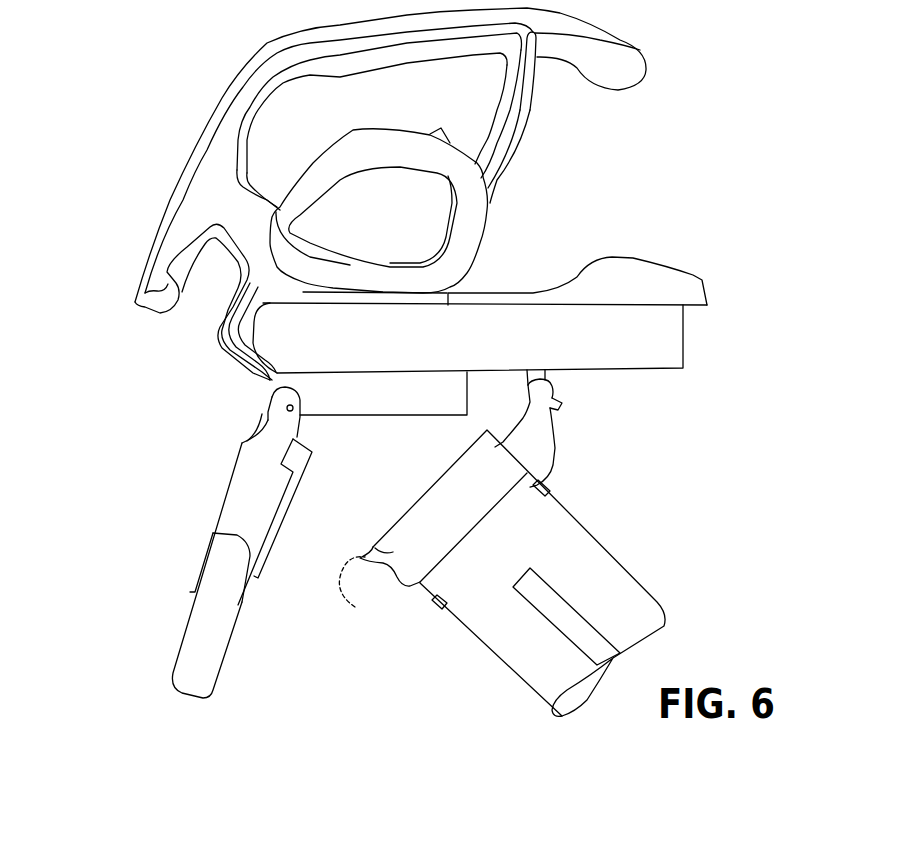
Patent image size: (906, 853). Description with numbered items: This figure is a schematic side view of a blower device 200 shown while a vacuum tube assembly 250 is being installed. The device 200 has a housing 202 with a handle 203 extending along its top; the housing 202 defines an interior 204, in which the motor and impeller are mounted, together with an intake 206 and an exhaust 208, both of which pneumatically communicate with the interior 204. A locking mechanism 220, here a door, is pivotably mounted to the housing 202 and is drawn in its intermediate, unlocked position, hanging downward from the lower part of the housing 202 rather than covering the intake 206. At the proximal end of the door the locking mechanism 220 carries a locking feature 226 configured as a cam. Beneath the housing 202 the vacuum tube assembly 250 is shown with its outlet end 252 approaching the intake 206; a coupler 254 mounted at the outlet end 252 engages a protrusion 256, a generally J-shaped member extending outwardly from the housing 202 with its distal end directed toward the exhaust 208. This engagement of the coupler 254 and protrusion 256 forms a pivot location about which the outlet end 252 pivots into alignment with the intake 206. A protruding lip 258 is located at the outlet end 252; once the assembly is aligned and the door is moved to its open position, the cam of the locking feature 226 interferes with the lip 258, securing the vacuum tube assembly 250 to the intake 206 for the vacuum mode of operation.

The device 200 is at (138, 59).
The housing 202 is at (473, 209).
The handle 203 is at (341, 40).
The interior 204 is at (342, 190).
The intake 206 is at (403, 420).
The exhaust 208 is at (685, 350).
The locking mechanism 220 is at (232, 500).
The locking feature 226 is at (270, 400).
The vacuum tube assembly 250 is at (590, 537).
The outlet end 252 is at (420, 497).
The coupler 254 is at (553, 460).
The protrusion 256 is at (552, 408).
The protruding lip 258 is at (379, 588).